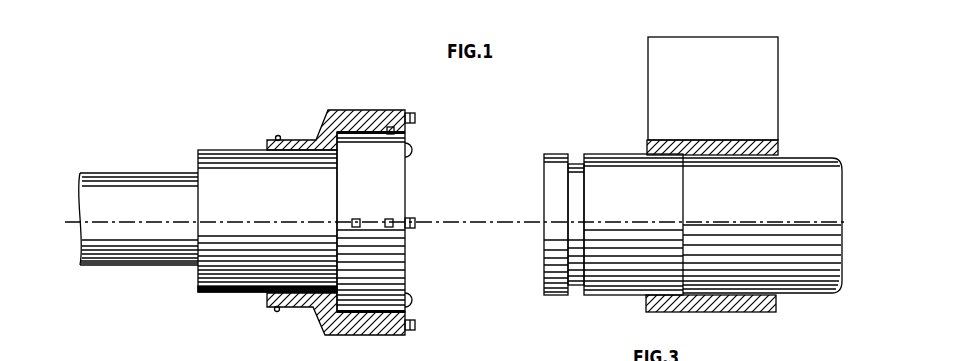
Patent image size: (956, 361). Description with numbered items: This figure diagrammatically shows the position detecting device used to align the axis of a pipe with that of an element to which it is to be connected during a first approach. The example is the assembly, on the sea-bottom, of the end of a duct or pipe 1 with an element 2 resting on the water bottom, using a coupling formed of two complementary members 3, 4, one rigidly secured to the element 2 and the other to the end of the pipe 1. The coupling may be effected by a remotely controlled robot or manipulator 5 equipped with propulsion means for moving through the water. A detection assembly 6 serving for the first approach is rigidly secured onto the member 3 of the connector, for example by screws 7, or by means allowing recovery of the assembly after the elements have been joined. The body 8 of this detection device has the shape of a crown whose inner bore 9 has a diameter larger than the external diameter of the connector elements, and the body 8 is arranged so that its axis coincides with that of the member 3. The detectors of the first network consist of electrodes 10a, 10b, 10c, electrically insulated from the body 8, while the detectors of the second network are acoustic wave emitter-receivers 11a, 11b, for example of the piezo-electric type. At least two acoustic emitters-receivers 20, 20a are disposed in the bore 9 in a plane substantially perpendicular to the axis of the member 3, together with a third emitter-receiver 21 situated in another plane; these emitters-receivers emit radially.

The pipe 1 is at (800, 157).
The element 2 is at (133, 171).
The complementary member 3 is at (205, 148).
The complementary member 4 is at (555, 152).
The manipulator 5 is at (665, 78).
The detection assembly 6 is at (334, 187).
The screws 7 is at (278, 135).
The body 8 is at (316, 315).
The inner bore 9 is at (378, 137).
The electrode 10a is at (415, 118).
The electrode 10b is at (415, 222).
The electrode 10c is at (415, 325).
The acoustic wave emitter-receiver 11a is at (413, 152).
The acoustic wave emitter-receiver 11b is at (413, 299).
The acoustic emitter-receiver 20 is at (392, 126).
The acoustic emitter-receiver 20a is at (393, 227).
The third emitter-receiver 21 is at (352, 219).